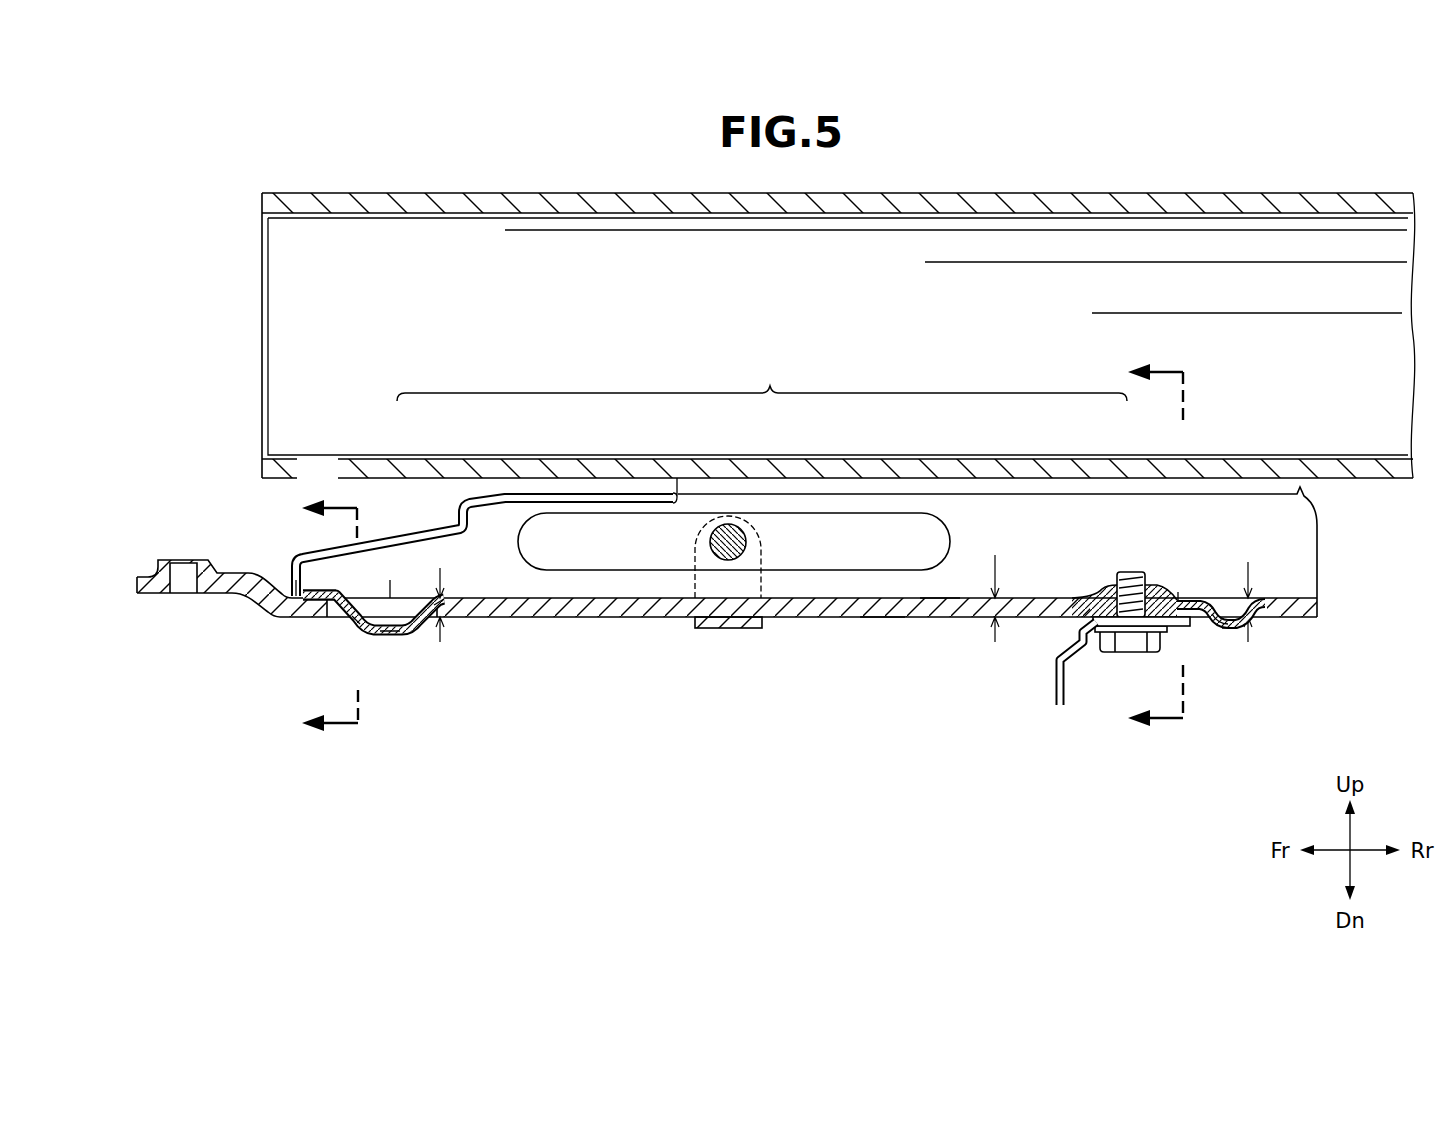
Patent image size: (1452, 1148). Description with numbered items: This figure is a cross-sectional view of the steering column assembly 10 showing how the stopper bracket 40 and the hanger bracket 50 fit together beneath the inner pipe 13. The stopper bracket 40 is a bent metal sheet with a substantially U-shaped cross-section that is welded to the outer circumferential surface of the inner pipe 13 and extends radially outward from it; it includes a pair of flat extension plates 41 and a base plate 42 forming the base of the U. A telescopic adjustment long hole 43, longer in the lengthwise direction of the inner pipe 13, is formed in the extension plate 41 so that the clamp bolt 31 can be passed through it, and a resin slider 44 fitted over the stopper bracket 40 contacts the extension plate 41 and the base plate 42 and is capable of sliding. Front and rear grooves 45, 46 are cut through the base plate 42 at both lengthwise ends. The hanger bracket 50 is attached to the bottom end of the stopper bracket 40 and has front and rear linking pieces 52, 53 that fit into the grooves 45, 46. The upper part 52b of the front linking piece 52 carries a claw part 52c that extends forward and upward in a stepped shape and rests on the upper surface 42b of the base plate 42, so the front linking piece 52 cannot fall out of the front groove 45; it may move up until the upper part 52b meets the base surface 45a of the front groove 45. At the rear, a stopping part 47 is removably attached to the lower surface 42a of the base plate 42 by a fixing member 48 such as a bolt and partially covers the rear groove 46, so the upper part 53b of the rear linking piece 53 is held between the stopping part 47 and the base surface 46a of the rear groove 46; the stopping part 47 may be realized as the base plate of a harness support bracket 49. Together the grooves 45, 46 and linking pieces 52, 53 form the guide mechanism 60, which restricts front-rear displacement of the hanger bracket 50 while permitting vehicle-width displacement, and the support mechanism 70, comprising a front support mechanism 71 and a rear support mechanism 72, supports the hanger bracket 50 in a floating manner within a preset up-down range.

The vehicle battery mounting structure 10 is at (172, 154).
The inner pipe 13 is at (362, 240).
The clamp bolt 31 is at (712, 541).
The stopper bracket 40 is at (1400, 517).
The extension plate 41 is at (1302, 540).
The base plate 42 is at (1305, 591).
The lower surface of the base plate 42a is at (883, 618).
The upper surface of the base plate 42b is at (940, 600).
The telescopic adjustment long hole 43 is at (812, 562).
The slider 44 is at (733, 620).
The front groove 45 is at (403, 597).
The base surface of the front groove 45a is at (385, 610).
The rear groove 46 is at (1234, 580).
The base surface of the rear groove 46a is at (1213, 600).
The stopping part 47 is at (1181, 628).
The fixing member 48 is at (1130, 642).
The harness support bracket 49 is at (1053, 686).
The hanger bracket 50 is at (343, 634).
The front linking piece 52 is at (352, 599).
The upper part of the front linking piece 52b is at (437, 632).
The claw part 52c is at (316, 586).
The rear linking piece 53 is at (1272, 648).
The upper part of the rear linking piece 53b is at (1258, 622).
The guide mechanism 60 is at (395, 665).
The support mechanism 70 is at (762, 377).
The front support mechanism 71 is at (390, 562).
The rear support mechanism 72 is at (1182, 580).